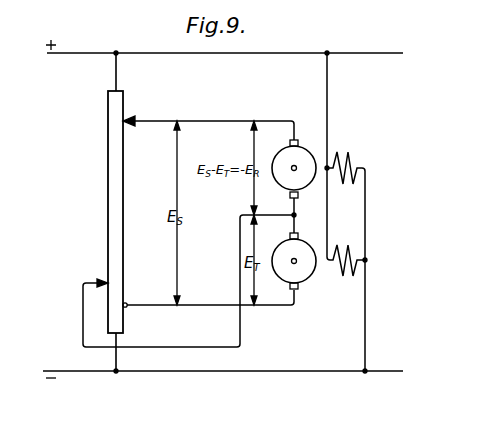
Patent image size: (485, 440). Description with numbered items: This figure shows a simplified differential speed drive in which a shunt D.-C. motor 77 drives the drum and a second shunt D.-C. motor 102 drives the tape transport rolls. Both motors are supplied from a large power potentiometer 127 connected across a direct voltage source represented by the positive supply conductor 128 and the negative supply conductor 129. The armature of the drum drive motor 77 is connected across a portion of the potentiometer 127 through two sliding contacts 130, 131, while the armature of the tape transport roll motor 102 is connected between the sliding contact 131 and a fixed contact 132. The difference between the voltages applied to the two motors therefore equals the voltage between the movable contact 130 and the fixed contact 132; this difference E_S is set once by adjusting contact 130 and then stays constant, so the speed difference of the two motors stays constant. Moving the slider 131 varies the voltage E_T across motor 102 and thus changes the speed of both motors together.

The positive supply conductor 128 is at (64, 56).
The negative supply conductor 129 is at (59, 368).
The power potentiometer 127 is at (107, 198).
The sliding contact 130 is at (127, 116).
The sliding contact 131 is at (105, 280).
The fixed contact 132 is at (128, 303).
The shunt D.-C. motor 77 is at (302, 153).
The shunt D.-C. motor 102 is at (305, 279).